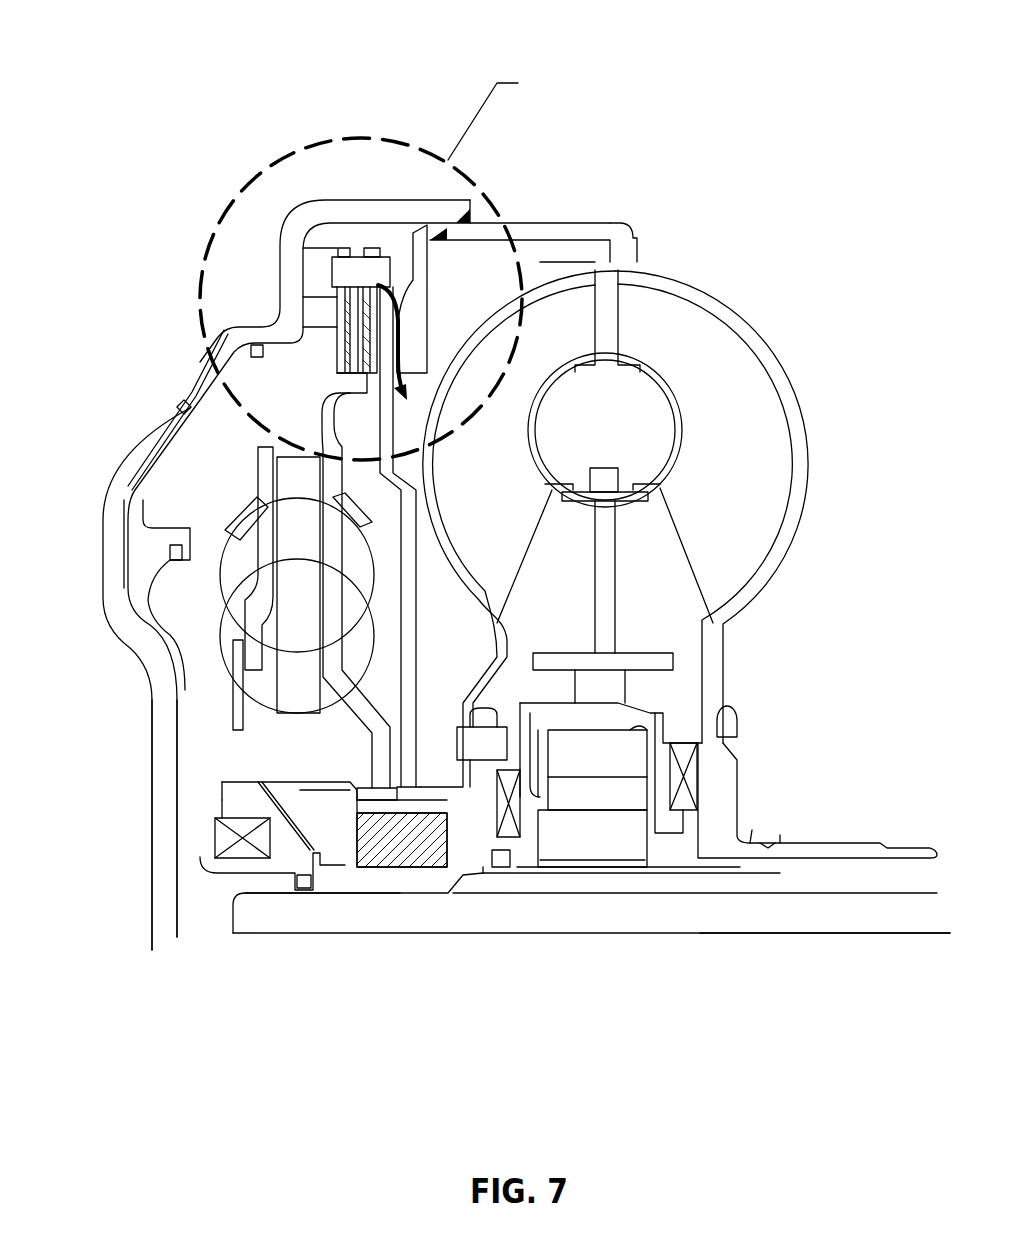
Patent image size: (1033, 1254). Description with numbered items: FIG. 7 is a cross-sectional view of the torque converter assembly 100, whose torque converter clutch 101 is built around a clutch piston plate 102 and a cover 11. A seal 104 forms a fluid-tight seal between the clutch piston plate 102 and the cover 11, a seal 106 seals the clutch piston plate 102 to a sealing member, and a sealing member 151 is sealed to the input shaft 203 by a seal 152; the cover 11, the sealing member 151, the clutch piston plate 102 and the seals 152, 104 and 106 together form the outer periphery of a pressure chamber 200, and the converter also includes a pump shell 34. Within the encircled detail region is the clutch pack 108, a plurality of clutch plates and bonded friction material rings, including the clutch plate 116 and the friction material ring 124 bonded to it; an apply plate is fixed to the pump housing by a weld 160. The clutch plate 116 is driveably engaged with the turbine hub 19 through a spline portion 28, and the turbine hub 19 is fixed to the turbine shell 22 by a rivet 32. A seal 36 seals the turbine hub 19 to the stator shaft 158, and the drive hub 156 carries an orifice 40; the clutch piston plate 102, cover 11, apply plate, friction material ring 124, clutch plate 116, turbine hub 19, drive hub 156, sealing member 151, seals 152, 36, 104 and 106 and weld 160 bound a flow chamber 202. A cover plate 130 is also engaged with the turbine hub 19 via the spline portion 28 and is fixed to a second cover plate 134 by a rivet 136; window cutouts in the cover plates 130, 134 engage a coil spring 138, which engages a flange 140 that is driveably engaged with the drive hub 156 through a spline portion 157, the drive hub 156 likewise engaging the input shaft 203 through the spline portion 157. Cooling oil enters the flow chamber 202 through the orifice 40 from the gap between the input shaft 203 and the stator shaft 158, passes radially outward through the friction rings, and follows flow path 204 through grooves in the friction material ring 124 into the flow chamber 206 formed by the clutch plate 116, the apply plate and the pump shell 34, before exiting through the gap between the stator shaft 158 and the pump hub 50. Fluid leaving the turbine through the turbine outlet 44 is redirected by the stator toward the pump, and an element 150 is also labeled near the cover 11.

The clutch assembly 100 is at (813, 128).
The cover 11 is at (197, 347).
The turbine hub 19 is at (483, 797).
The turbine shell 22 is at (477, 597).
The spline portion 28 is at (355, 773).
The rivet 32 is at (493, 742).
The pump shell 34 is at (795, 375).
The seal 36 is at (503, 867).
The orifice 40 is at (267, 803).
The turbine outlet 44 is at (254, 774).
The pump hub 50 is at (838, 848).
The torque converter clutch 101 is at (322, 300).
The clutch piston plate 102 is at (243, 507).
The seal 104 is at (253, 347).
The seal 106 is at (157, 550).
The clutch pack 108 is at (344, 226).
The clutch plate 116 is at (410, 677).
The friction material ring 124 is at (398, 280).
The cover plate 130 is at (375, 505).
The cover plate 134 is at (176, 397).
The rivet 136 is at (398, 320).
The coil spring 138 is at (370, 590).
The flange 140 is at (300, 720).
The wall 150 is at (197, 357).
The sealing member 151 is at (190, 703).
The seal 152 is at (290, 880).
The drive hub 156 is at (397, 873).
The spline portion 157 is at (255, 760).
The stator shaft 158 is at (637, 873).
The weld 160 is at (420, 152).
The pressure chamber 200 is at (137, 517).
The flow chamber 202 is at (165, 505).
The input shaft 203 is at (872, 907).
The flow path 204 is at (510, 237).
The flow chamber 206 is at (597, 258).